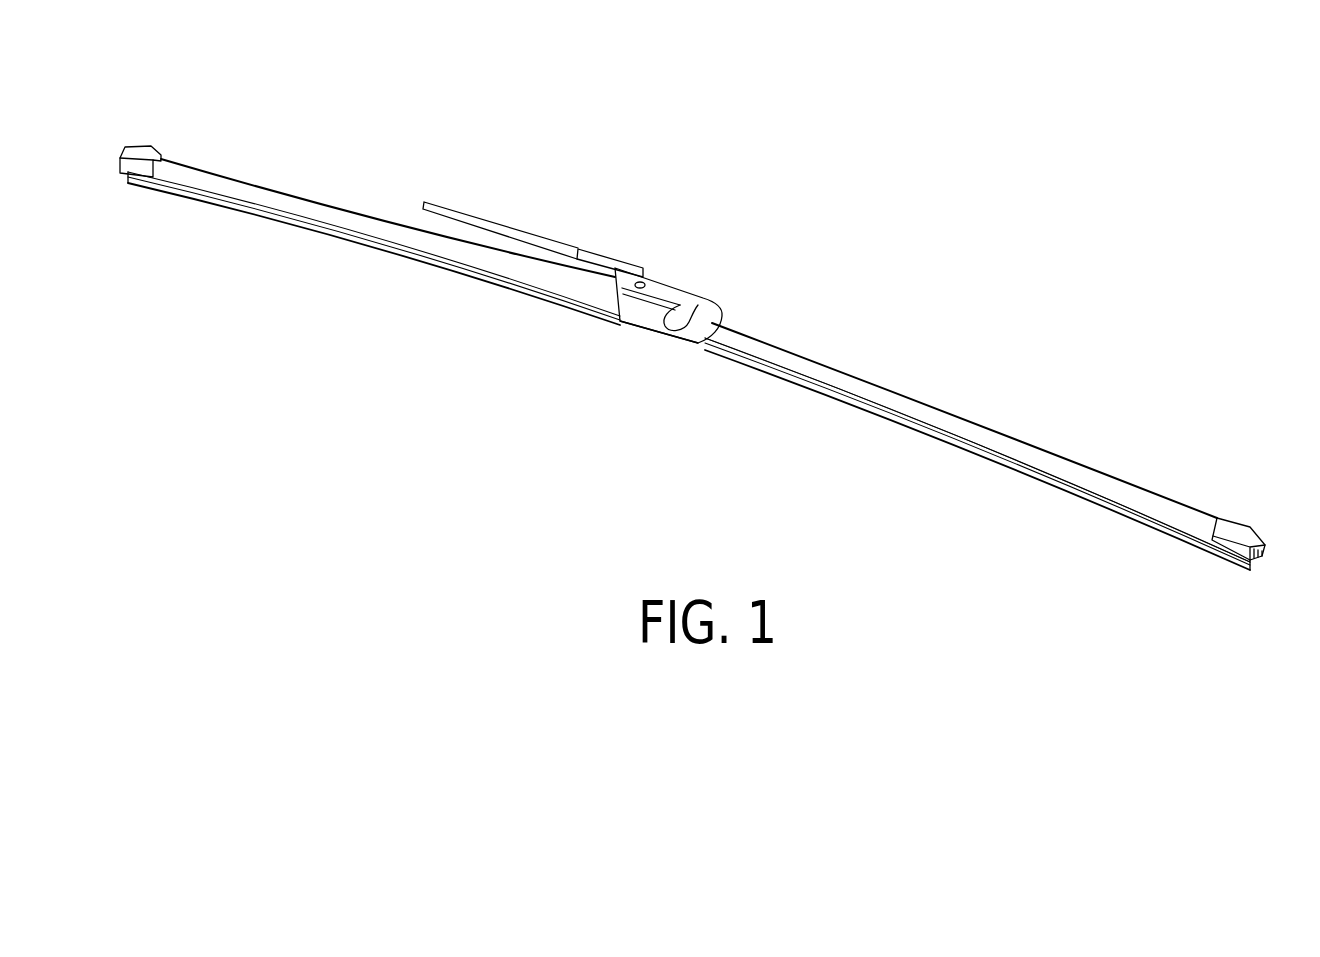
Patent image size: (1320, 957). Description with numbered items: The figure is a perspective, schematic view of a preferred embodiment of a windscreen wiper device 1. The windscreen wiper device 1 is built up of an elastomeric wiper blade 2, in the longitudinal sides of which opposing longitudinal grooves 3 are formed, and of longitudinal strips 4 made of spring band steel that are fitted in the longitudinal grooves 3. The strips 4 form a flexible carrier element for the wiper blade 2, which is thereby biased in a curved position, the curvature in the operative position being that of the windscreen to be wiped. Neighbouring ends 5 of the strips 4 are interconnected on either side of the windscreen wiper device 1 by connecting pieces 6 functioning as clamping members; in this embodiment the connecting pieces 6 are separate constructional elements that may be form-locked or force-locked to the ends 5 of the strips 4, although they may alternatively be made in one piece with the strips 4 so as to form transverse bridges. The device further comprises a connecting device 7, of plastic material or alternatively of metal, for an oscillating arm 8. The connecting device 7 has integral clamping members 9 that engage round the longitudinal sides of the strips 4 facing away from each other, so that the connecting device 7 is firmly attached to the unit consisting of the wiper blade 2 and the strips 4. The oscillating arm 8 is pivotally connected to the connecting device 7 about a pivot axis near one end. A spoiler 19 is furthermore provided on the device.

The windscreen wiper device 1 is at (912, 192).
The wiper blade 2 is at (902, 427).
The longitudinal grooves 3 is at (987, 453).
The longitudinal strips 4 is at (818, 396).
The neighbouring ends 5 is at (1260, 557).
The connecting pieces 6 is at (143, 147).
The connecting device 7 is at (718, 303).
The oscillating arm 8 is at (582, 250).
The clamping members 9 is at (707, 350).
The spoiler 19 is at (296, 201).